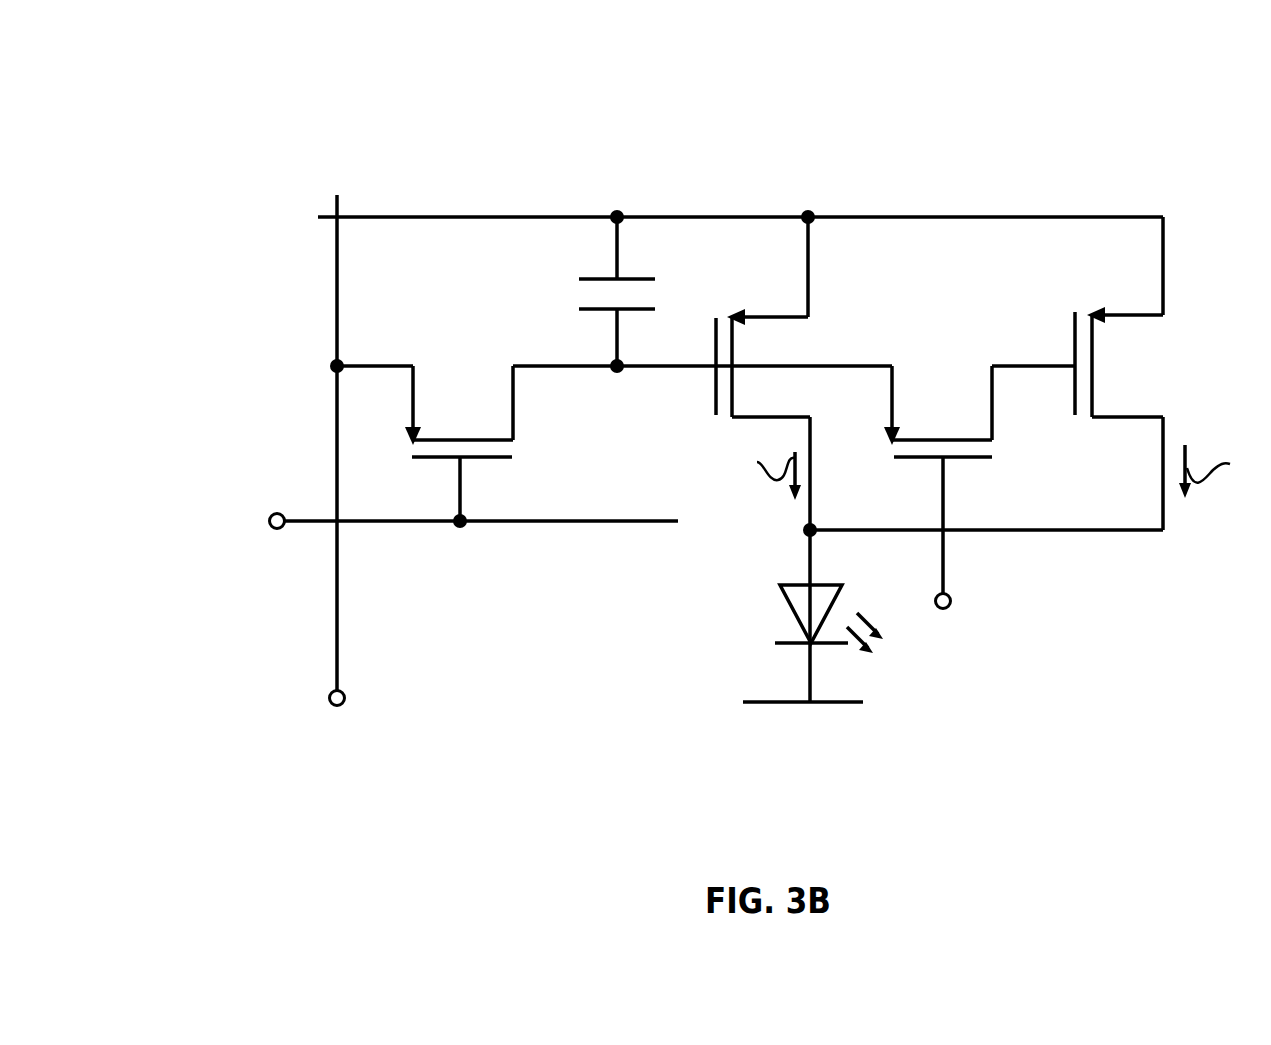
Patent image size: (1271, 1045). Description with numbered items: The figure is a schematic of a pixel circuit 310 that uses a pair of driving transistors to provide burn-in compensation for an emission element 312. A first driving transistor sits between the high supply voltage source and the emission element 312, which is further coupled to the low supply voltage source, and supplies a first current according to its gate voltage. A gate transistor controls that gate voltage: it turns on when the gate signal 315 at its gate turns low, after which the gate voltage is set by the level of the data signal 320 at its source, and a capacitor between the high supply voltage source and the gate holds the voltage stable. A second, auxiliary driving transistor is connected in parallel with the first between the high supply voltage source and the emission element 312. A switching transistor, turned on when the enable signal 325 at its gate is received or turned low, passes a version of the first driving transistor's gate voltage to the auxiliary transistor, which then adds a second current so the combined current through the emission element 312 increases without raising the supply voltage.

The pixel circuit 310 is at (653, 384).
The emission element 312 is at (790, 604).
The gate signal 315 is at (270, 521).
The data signal 320 is at (328, 697).
The enable signal 325 is at (952, 604).